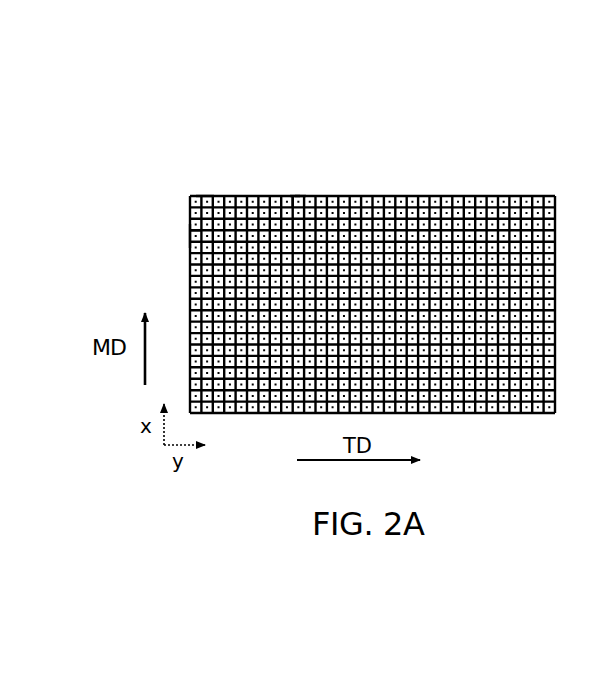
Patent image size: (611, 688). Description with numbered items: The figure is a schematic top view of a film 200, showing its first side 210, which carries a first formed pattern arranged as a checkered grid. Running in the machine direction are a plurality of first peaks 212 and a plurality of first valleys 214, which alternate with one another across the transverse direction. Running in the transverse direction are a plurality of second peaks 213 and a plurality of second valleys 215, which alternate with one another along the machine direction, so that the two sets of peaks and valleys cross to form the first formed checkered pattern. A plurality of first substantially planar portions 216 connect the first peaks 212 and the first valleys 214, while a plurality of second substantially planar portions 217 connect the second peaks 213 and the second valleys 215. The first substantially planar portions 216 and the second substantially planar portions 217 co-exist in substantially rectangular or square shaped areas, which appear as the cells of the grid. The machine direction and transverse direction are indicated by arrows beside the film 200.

The film 200 is at (212, 151).
The first side 210 is at (205, 196).
The first peaks 212 is at (296, 196).
The second peaks 213 is at (190, 230).
The first valleys 214 is at (299, 196).
The second valleys 215 is at (190, 242).
The first substantially planar portions 216 is at (297, 196).
The second substantially planar portions 217 is at (190, 235).